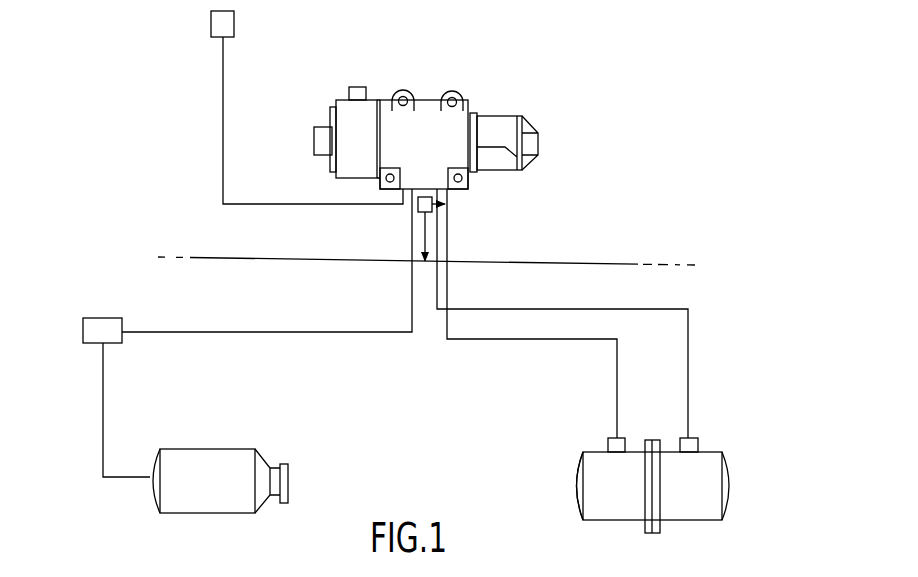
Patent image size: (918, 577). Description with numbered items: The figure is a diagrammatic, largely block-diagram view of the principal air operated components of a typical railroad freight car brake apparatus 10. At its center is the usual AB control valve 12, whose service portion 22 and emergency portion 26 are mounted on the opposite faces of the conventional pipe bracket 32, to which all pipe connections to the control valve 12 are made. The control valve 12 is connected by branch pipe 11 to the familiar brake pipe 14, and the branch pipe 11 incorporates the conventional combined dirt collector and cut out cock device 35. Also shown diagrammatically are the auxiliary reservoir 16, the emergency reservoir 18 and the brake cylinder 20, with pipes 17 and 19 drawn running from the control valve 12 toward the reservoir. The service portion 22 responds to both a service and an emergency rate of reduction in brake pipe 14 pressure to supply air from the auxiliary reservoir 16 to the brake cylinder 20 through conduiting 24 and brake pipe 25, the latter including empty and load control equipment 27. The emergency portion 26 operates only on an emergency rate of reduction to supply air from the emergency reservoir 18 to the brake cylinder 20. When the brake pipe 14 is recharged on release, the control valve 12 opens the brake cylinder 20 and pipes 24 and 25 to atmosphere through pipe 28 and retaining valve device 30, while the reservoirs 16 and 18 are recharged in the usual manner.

The air operated brake apparatus 10 is at (624, 155).
The branch pipe 11 is at (430, 222).
The AB control valve 12 is at (482, 98).
The brake pipe 14 is at (622, 265).
The auxiliary reservoir 16 is at (734, 446).
The conduit 17 is at (672, 311).
The emergency reservoir 18 is at (561, 464).
The conduit 19 is at (618, 393).
The brake cylinder 20 is at (269, 442).
The service portion 22 is at (361, 82).
The conduiting 24 is at (300, 332).
The brake pipe 25 is at (103, 400).
The emergency portion 26 is at (533, 114).
The empty and load control equipment 27 is at (97, 318).
The pipe 28 is at (222, 118).
The retaining valve device 30 is at (234, 22).
The pipe bracket 32 is at (426, 90).
The combined dirt collector and cut out cock device 35 is at (446, 204).